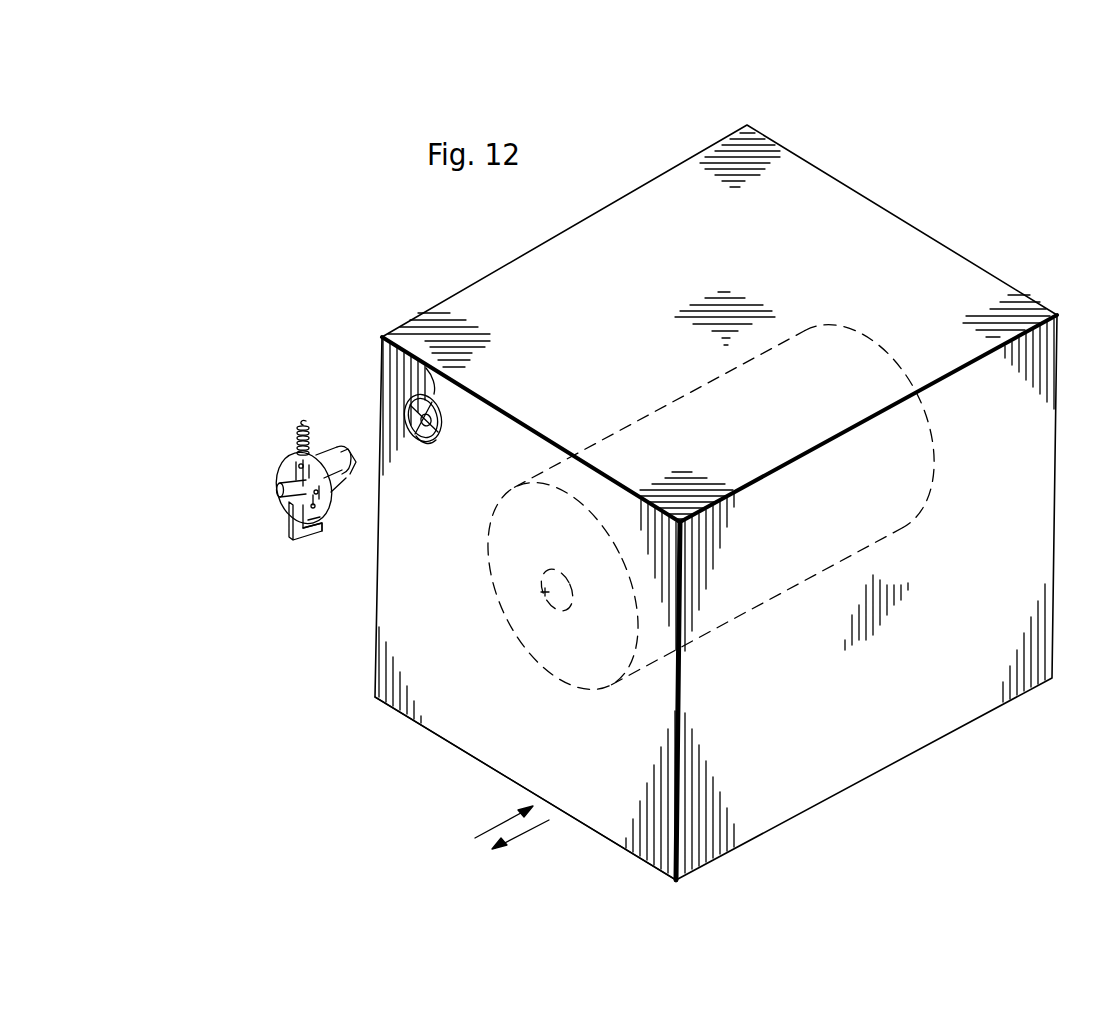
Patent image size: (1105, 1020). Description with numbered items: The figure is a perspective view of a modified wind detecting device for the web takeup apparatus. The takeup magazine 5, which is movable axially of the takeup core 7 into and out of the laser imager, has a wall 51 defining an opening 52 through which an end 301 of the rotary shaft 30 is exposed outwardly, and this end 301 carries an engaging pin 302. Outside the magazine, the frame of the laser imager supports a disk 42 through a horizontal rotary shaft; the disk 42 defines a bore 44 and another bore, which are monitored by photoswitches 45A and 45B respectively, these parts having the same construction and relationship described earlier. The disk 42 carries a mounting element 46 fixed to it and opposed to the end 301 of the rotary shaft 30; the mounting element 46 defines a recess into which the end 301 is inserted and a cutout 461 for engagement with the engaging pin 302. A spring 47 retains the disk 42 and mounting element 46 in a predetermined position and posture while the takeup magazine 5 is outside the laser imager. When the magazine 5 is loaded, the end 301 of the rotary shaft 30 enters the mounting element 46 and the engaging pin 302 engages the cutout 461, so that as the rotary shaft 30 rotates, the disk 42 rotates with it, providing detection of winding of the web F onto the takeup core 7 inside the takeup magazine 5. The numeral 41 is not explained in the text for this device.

The takeup magazine 5 is at (692, 502).
The wall 51 is at (525, 753).
The opening 52 is at (430, 378).
The takeup core 7 is at (546, 598).
The web F is at (549, 665).
The rotary shaft 30 is at (396, 418).
The end of the rotary shaft 301 is at (433, 444).
The engaging pin 302 is at (410, 413).
The detecting assembly 41 is at (287, 506).
The disk 42 is at (285, 472).
The bore 44 is at (277, 489).
The photoswitch 45A is at (296, 538).
The photoswitch 45B is at (290, 510).
The mounting element 46 is at (376, 518).
The cutout 461 is at (350, 457).
The spring 47 is at (298, 440).